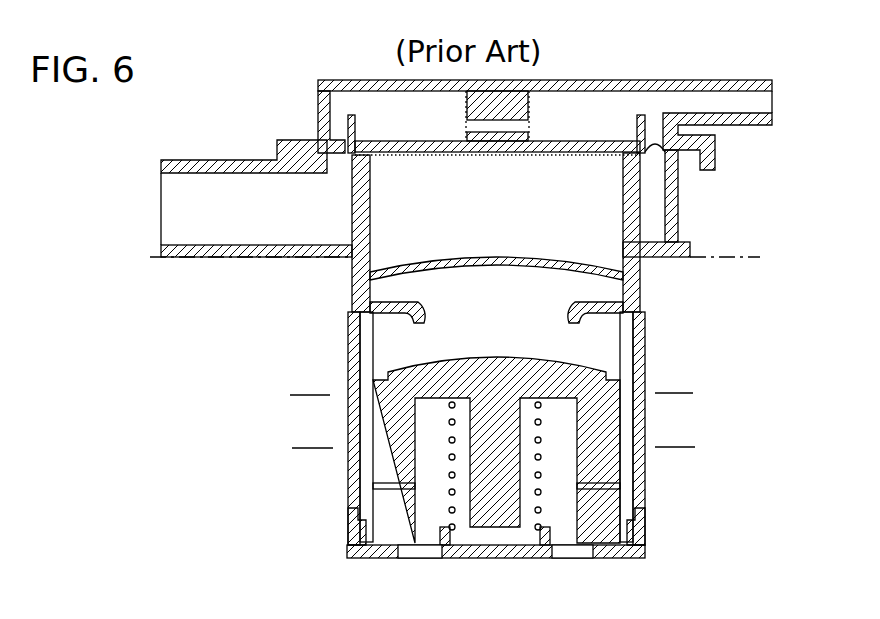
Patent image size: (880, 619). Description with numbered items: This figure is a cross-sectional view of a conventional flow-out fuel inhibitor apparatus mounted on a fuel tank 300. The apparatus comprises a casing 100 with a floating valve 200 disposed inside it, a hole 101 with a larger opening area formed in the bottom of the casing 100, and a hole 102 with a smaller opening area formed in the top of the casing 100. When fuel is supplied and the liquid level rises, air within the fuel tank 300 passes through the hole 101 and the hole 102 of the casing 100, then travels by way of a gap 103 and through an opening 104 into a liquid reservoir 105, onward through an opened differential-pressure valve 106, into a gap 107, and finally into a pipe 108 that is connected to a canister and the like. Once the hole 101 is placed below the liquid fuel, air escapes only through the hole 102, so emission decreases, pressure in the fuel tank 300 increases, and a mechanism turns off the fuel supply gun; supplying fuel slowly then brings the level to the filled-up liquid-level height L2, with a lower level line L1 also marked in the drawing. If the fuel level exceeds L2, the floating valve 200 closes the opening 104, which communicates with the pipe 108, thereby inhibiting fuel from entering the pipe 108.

The casing 100 is at (645, 296).
The hole with a larger opening area 101 is at (637, 458).
The hole with a smaller opening area 102 is at (637, 330).
The gap 103 is at (368, 472).
The opening 104 is at (426, 322).
The liquid reservoir 105 is at (535, 232).
The differential-pressure valve 106 is at (440, 155).
The gap 107 is at (655, 193).
The pipe 108 is at (232, 158).
The floating valve 200 is at (503, 370).
The fuel tank 300 is at (735, 257).
The lower level line L1 is at (517, 447).
The filled-up liquid-level height L2 is at (516, 393).